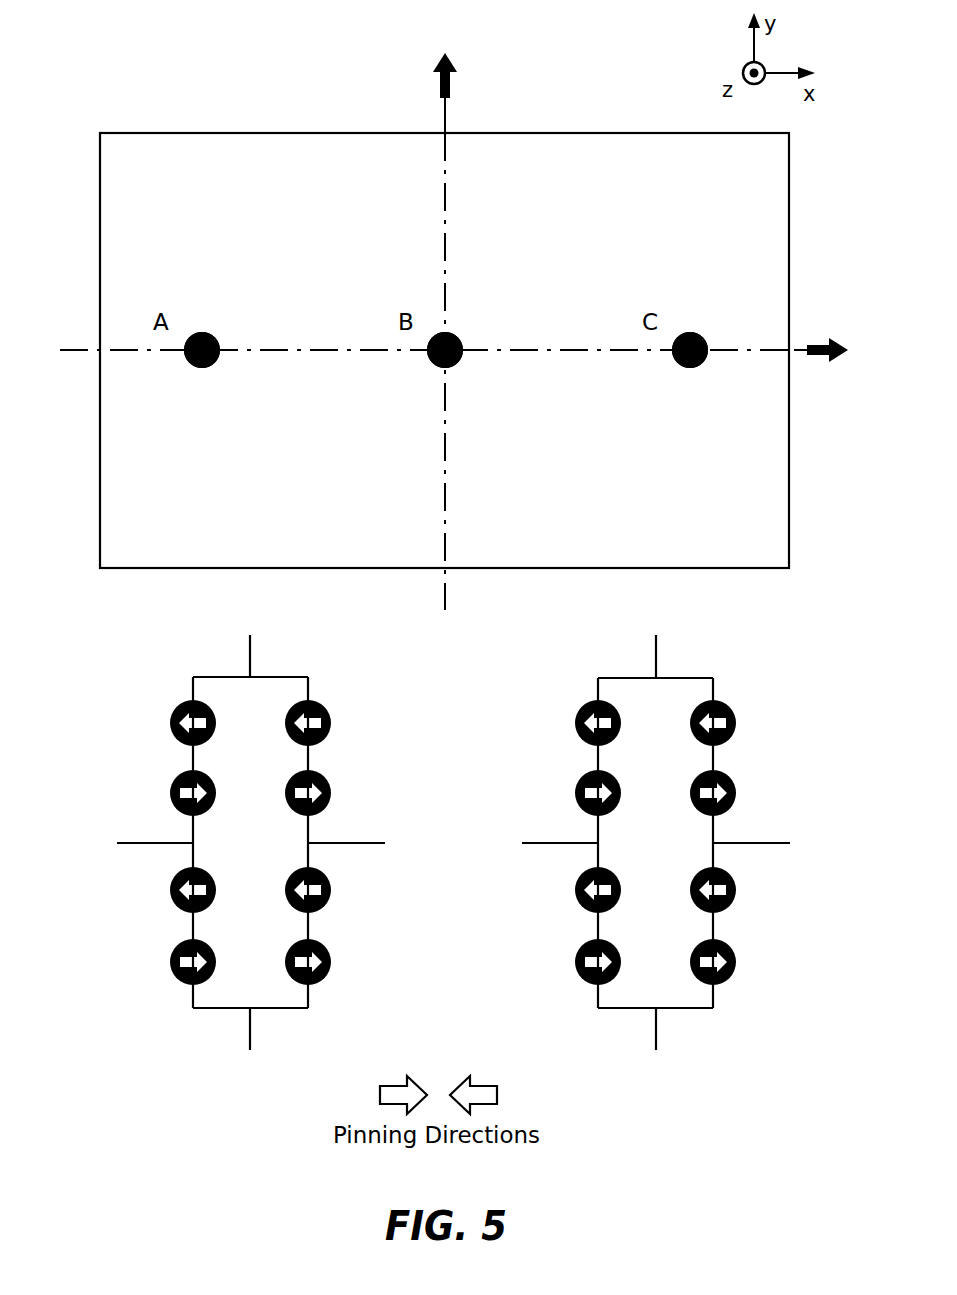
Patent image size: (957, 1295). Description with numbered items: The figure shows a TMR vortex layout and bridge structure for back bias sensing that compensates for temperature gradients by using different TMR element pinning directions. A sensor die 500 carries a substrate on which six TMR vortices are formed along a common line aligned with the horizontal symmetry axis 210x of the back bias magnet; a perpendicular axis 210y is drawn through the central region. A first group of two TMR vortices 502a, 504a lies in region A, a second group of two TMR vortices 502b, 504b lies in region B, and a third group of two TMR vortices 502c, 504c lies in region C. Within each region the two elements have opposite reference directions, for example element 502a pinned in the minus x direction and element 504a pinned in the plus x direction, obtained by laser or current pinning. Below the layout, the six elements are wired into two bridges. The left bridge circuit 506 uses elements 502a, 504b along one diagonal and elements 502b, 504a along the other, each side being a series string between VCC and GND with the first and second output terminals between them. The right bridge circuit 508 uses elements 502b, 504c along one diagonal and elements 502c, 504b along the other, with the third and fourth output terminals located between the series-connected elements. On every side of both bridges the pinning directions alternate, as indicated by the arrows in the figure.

The sensor die 500 is at (158, 168).
The y-axis direction 210y is at (444, 319).
The horizontal symmetry axis 210x is at (462, 333).
The TMR vortex 502a is at (202, 368).
The TMR vortex 504a is at (170, 962).
The TMR vortex 502b is at (438, 364).
The TMR vortex 504b is at (170, 794).
The TMR vortex 502c is at (692, 368).
The TMR vortex 504c is at (575, 794).
The bridge circuit 506 is at (160, 658).
The bridge circuit 508 is at (748, 658).